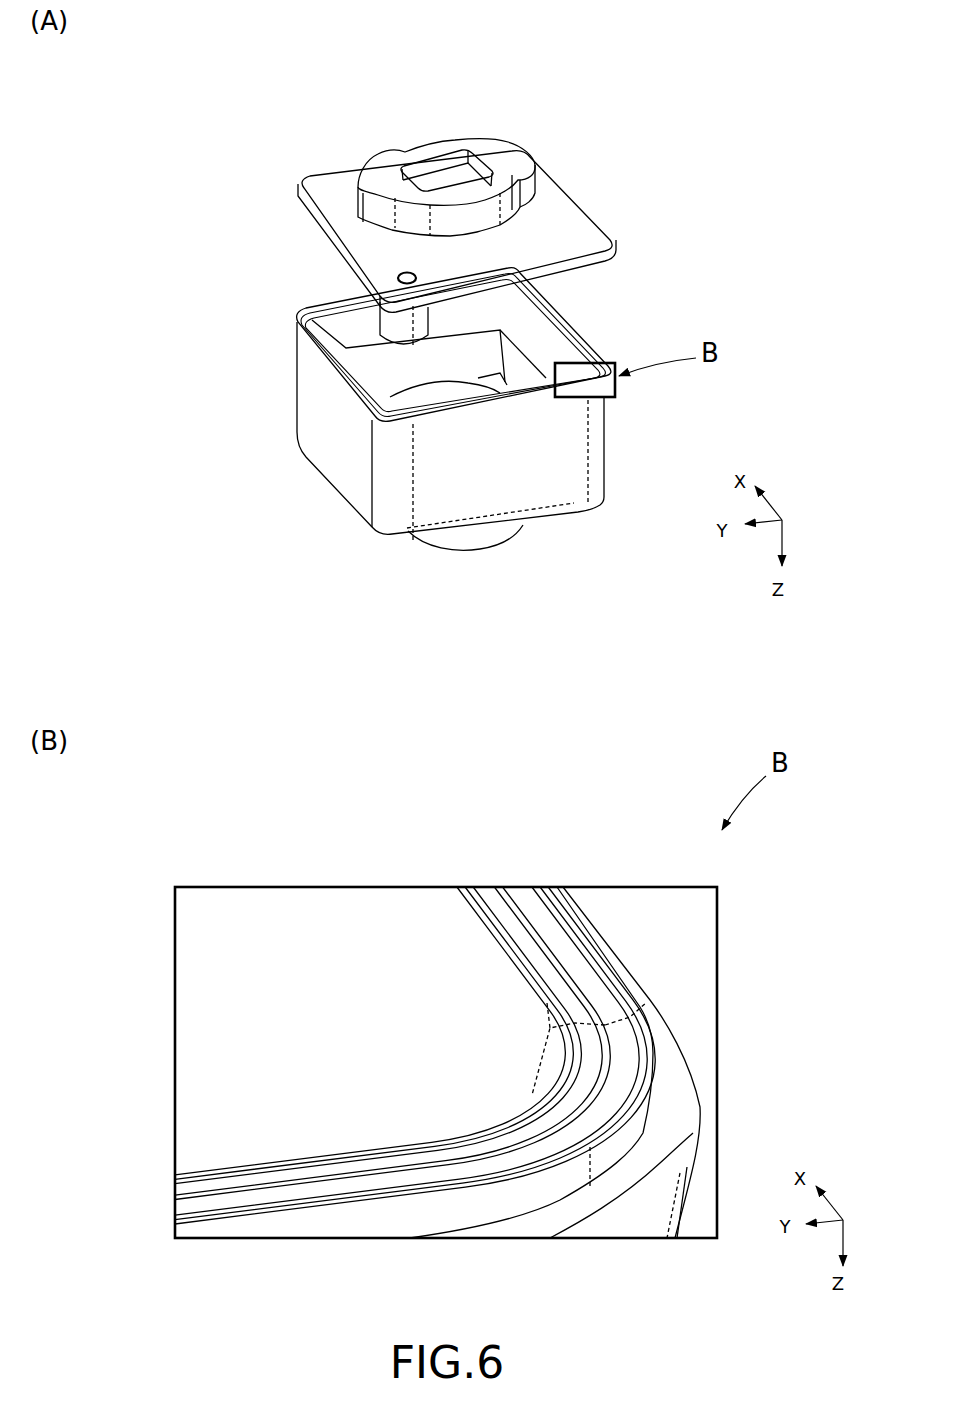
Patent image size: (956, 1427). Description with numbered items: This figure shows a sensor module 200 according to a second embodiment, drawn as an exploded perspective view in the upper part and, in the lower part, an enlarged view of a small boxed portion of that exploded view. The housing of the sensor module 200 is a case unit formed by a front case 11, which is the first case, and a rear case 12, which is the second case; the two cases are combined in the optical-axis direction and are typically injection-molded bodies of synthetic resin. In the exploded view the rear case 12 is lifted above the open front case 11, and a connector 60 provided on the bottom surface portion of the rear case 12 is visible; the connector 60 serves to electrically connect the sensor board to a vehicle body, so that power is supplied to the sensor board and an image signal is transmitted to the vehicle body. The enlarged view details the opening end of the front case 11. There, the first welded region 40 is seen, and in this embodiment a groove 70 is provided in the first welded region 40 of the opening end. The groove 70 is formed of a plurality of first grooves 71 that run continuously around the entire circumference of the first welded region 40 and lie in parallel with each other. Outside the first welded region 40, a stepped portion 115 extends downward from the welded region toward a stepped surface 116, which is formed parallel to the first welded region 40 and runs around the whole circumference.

The front case 11 is at (303, 480).
The rear case 12 is at (306, 158).
The connector 60 is at (492, 152).
The sensor module 200 is at (620, 126).
The first welded region 40 is at (605, 1025).
The groove 70 is at (497, 805).
The first grooves 71 is at (517, 943).
The stepped portion 115 is at (647, 1107).
The stepped surface 116 is at (665, 1127).